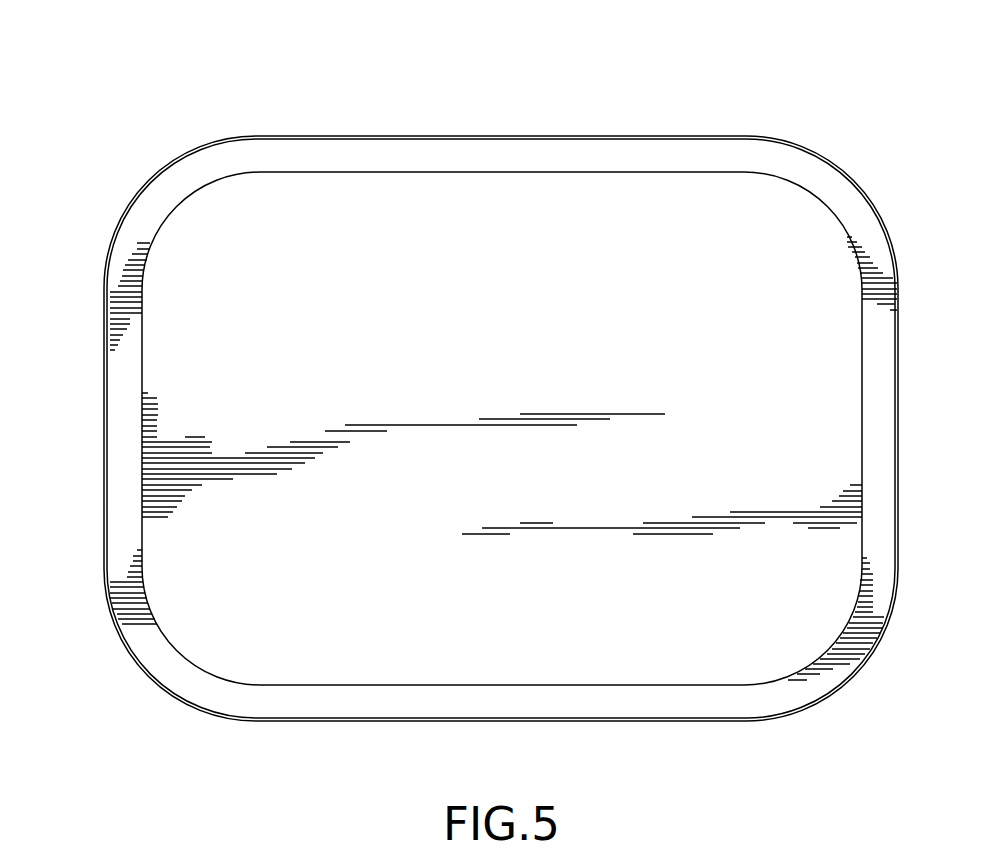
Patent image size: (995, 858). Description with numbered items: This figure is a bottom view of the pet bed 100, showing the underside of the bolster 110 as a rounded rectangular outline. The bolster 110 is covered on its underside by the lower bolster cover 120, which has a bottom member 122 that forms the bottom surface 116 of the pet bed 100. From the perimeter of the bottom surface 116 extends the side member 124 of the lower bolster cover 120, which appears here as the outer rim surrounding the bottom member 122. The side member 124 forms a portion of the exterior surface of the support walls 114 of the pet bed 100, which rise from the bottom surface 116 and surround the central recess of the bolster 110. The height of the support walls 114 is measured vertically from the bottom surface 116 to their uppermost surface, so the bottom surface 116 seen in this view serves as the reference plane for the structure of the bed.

The pet bed 100 is at (172, 92).
The bolster 110 is at (192, 627).
The support walls 114 is at (106, 365).
The bottom surface 116 is at (636, 665).
The lower bolster cover 120 is at (878, 343).
The bottom member 122 is at (822, 463).
The side member 124 is at (803, 148).